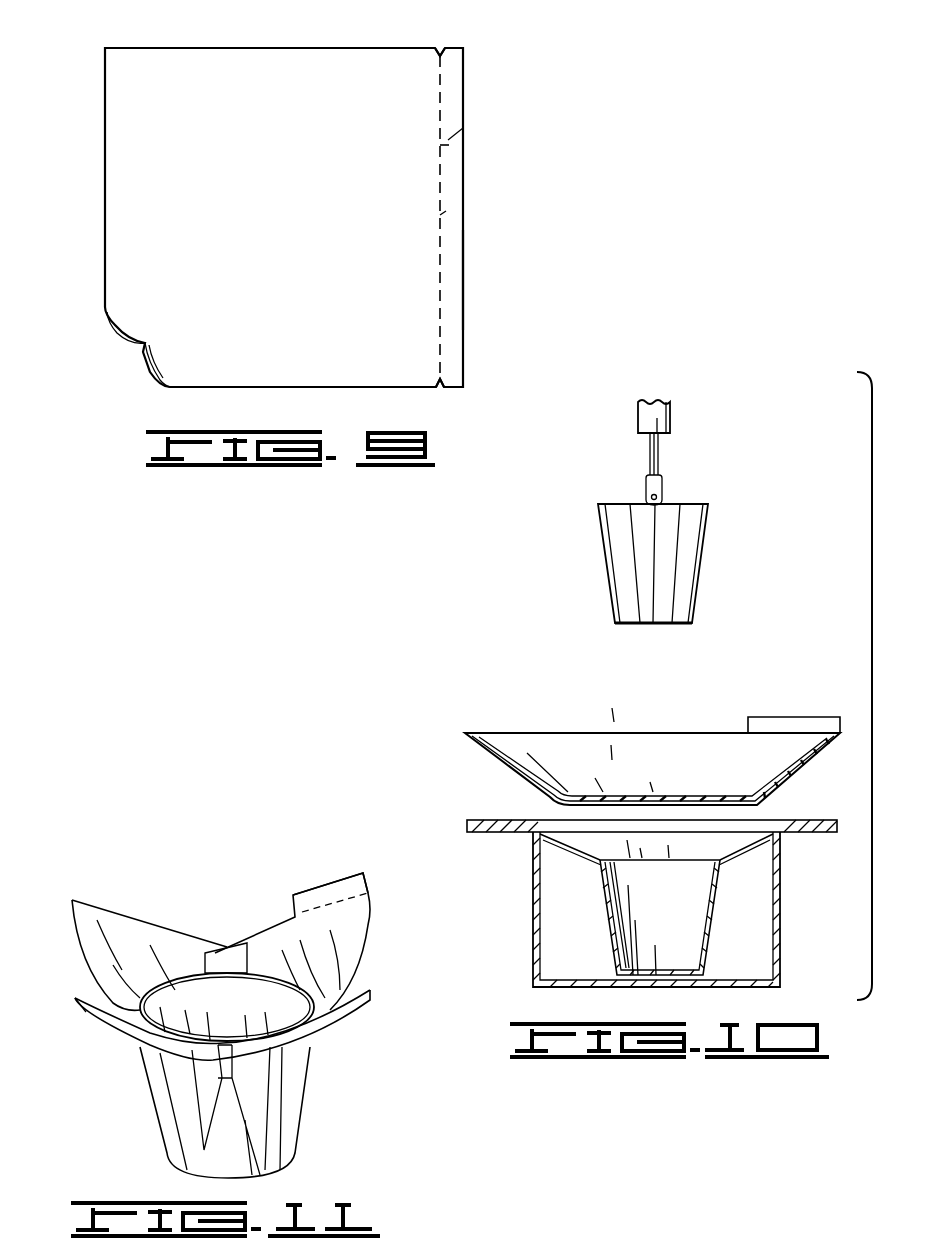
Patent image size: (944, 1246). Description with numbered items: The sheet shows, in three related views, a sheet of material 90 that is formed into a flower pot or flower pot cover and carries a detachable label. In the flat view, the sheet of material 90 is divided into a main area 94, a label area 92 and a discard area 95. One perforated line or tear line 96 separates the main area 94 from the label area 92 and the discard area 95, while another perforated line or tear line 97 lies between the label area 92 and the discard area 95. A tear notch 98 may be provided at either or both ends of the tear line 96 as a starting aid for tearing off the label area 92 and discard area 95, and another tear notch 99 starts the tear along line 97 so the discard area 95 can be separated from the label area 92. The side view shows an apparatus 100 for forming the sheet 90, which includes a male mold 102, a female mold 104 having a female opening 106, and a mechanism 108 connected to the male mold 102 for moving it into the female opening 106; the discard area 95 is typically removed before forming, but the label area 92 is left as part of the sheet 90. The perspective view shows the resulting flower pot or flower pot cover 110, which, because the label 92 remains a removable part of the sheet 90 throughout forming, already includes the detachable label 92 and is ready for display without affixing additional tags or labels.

In FIG. 9, the sheet of material 90 is at (296, 218).
In FIG. 10, the sheet of material 90 is at (616, 737).
In FIG. 9, the label area 92 is at (457, 95).
In FIG. 10, the label area 92 is at (798, 725).
In FIG. 11, the label area 92 is at (320, 893).
In FIG. 9, the main area 94 is at (202, 177).
In FIG. 10, the main area 94 is at (617, 757).
In FIG. 9, the discard area 95 is at (455, 278).
In FIG. 9, the perforated line or tear line 96 is at (442, 215).
In FIG. 9, the perforated line or tear line 97 is at (466, 128).
In FIG. 9, the tear notch 98 is at (441, 47).
In FIG. 9, the tear notch 99 is at (452, 145).
In FIG. 10, the apparatus 100 is at (618, 688).
In FIG. 10, the male mold 102 is at (697, 560).
In FIG. 10, the female mold 104 is at (597, 897).
In FIG. 10, the female opening 106 is at (690, 893).
In FIG. 10, the mechanism 108 is at (670, 422).
In FIG. 11, the flower pot or flower pot cover 110 is at (170, 912).